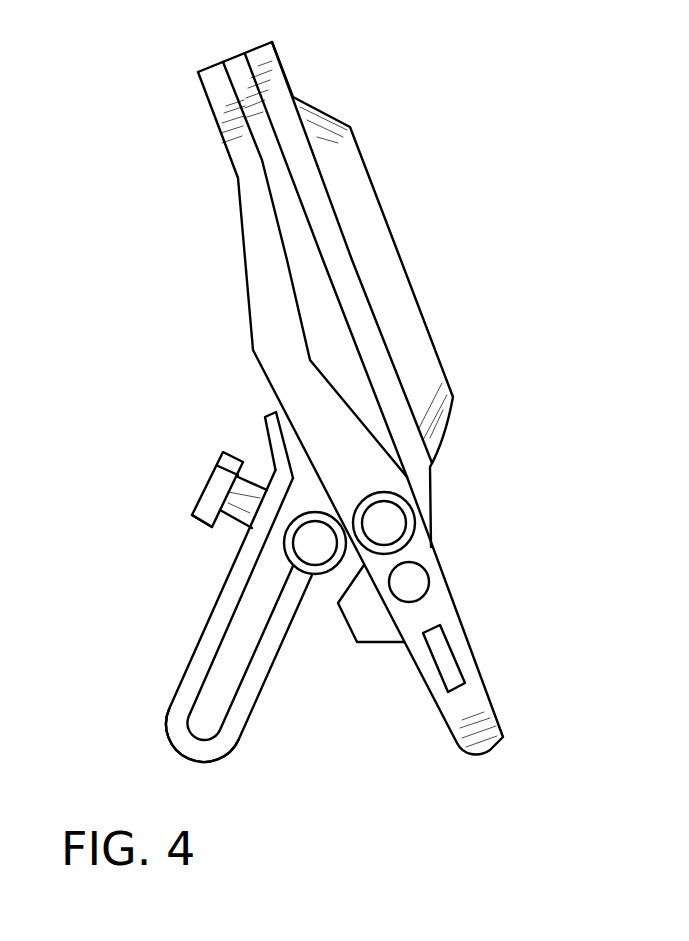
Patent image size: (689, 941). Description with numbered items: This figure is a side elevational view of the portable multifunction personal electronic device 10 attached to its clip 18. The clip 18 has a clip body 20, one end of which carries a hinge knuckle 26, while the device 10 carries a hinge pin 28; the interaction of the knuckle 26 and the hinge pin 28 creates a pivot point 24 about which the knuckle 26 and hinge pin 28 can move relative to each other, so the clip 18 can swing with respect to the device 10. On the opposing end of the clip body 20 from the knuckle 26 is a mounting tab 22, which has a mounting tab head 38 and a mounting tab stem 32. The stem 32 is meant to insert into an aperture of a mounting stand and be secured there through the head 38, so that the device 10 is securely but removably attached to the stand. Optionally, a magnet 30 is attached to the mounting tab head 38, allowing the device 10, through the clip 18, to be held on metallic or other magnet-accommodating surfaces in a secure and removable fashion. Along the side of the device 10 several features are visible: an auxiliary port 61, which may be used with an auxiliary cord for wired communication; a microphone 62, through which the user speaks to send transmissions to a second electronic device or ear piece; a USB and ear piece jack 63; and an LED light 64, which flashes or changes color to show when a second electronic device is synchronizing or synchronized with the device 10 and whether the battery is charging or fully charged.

The portable multifunction personal electronic device 10 is at (132, 227).
The clip 18 is at (206, 595).
The clip body 20 is at (253, 710).
The mounting tab 22 is at (168, 506).
The pivot point 24 is at (294, 510).
The hinge knuckle 26 is at (313, 557).
The hinge pin 28 is at (318, 578).
The magnet 30 is at (200, 500).
The mounting tab stem 32 is at (210, 477).
The mounting tab head 38 is at (200, 518).
The auxiliary port 61 is at (398, 518).
The microphone 62 is at (418, 580).
The USB and ear piece jack 63 is at (448, 652).
The LED light 64 is at (377, 640).